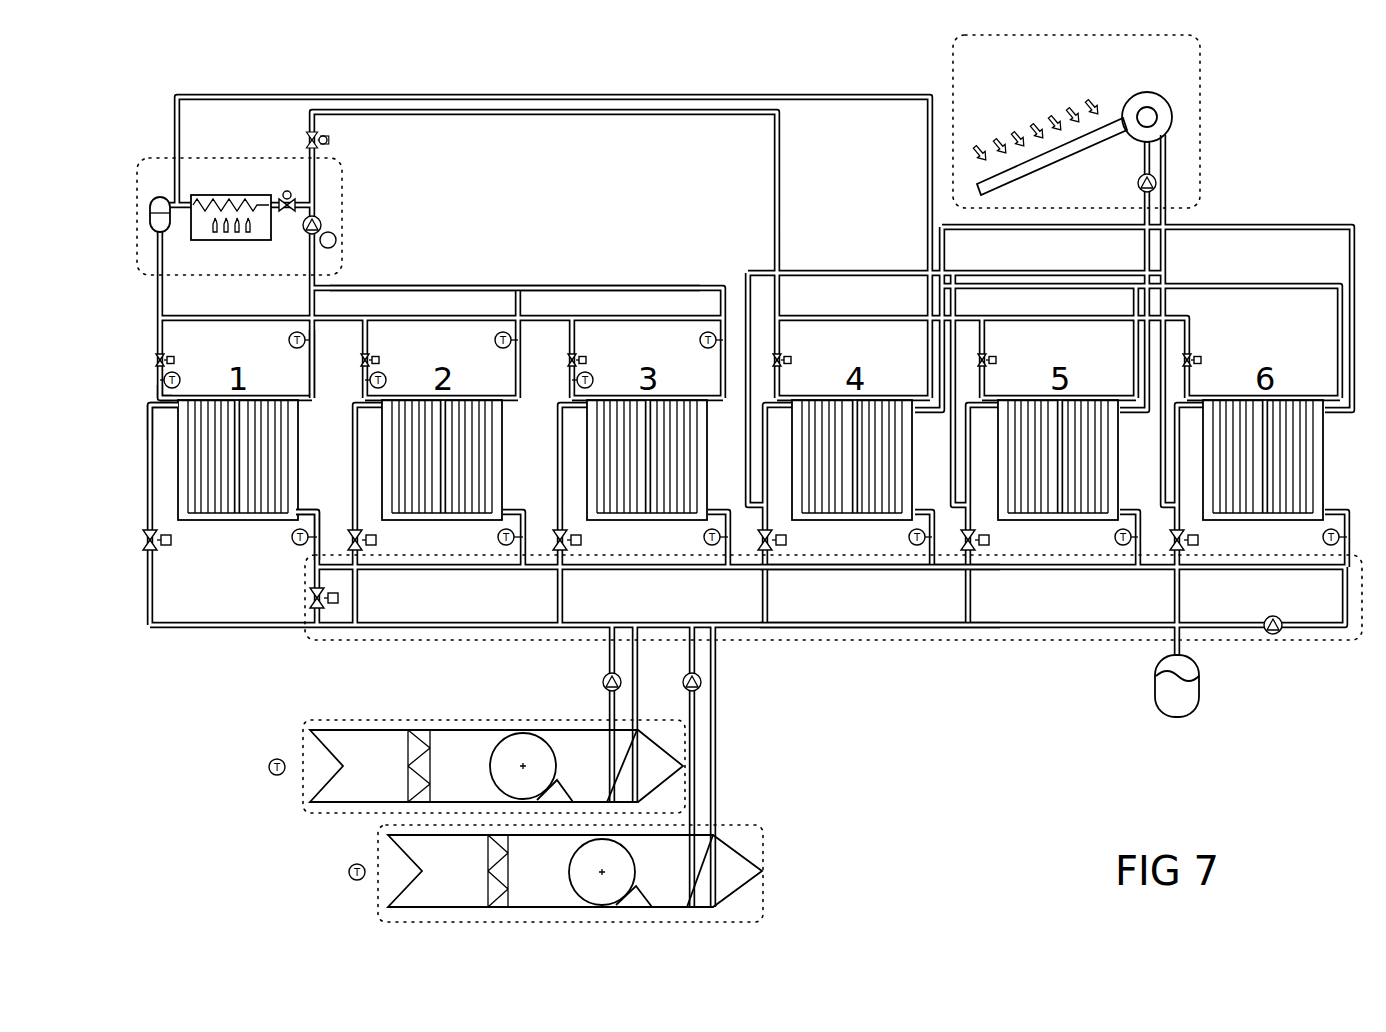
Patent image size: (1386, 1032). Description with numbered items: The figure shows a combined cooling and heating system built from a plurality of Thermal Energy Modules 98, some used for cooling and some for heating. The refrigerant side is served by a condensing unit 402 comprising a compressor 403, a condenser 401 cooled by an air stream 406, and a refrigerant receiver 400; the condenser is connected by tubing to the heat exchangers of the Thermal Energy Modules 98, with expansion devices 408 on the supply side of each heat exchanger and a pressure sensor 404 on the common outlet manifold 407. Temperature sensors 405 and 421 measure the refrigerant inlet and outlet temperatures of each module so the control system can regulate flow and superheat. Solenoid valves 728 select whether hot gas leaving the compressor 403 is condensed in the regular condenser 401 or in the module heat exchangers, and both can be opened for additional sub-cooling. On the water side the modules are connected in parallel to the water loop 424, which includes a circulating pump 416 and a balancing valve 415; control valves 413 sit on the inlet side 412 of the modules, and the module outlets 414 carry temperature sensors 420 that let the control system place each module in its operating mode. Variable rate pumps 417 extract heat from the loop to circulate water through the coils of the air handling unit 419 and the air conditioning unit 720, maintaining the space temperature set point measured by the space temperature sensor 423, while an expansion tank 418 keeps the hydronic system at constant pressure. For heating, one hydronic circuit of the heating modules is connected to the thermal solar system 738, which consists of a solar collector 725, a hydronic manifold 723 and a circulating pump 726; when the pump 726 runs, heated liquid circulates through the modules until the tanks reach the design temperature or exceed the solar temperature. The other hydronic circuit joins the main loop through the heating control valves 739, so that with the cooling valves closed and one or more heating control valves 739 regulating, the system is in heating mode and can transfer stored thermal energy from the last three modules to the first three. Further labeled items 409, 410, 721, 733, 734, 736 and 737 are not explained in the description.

The Thermal Energy Module 98 is at (237, 521).
The refrigerant receiver 400 is at (160, 197).
The condenser 401 is at (225, 195).
The condensing unit 402 is at (218, 157).
The compressor 403 is at (321, 225).
The pressure sensor 404 is at (336, 240).
The temperature sensor 405 is at (180, 380).
The air stream 406 is at (212, 232).
The common outlet manifold 407 is at (438, 285).
The expansion device 408 is at (174, 360).
The pipe junction 409 is at (158, 396).
The return pipe 410 is at (302, 406).
The inlet side 412 is at (148, 412).
The control valve 413 is at (171, 540).
The Thermal Energy Module outlet 414 is at (318, 508).
The balancing valve 415 is at (314, 594).
The circulating pump 416 is at (1273, 617).
The variable rate pump 417 is at (604, 676).
The expansion tank 418 is at (1155, 677).
The air handling unit 419 is at (303, 735).
The temperature sensor 420 is at (292, 537).
The temperature sensor 421 is at (289, 340).
The space temperature sensor 423 is at (269, 767).
The water loop 424 is at (412, 642).
The air conditioning unit 720 is at (378, 828).
The solar radiation 721 is at (1035, 122).
The hydronic manifold 723 is at (1164, 93).
The solar collector 725 is at (1042, 172).
The circulating pump 726 is at (1138, 184).
The solenoid valve 728 is at (286, 191).
The upper manifold pipe 733 is at (888, 571).
The lower manifold pipe 734 is at (886, 641).
The temperature sensor 736 is at (349, 872).
The bypass valve 737 is at (791, 360).
The thermal solar system 738 is at (1200, 100).
The heating control valve 739 is at (786, 540).